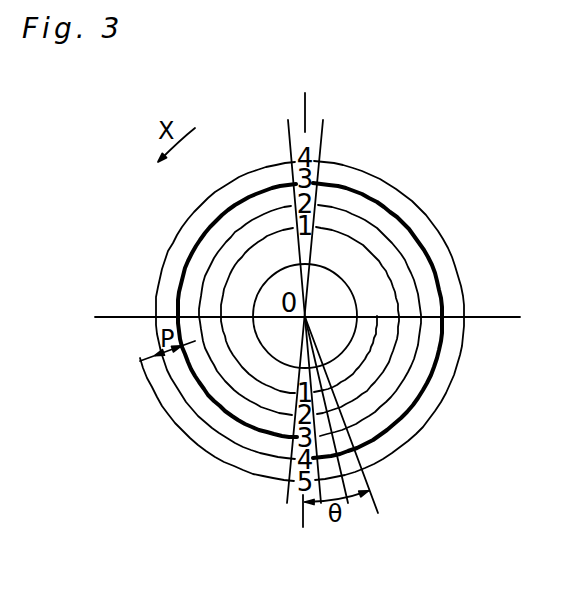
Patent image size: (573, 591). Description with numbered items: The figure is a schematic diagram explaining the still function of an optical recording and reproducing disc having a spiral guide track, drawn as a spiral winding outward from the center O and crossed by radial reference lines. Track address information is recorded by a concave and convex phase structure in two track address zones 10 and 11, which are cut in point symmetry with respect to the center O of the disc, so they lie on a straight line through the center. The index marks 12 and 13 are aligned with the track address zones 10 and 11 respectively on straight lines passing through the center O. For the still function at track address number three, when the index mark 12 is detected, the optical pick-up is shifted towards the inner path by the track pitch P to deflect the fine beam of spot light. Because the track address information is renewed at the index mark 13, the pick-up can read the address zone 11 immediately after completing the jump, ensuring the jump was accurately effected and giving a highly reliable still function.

The track address zone 10 is at (307, 102).
The track address zone 11 is at (303, 520).
The index mark 12 is at (306, 312).
The index mark 13 is at (322, 350).